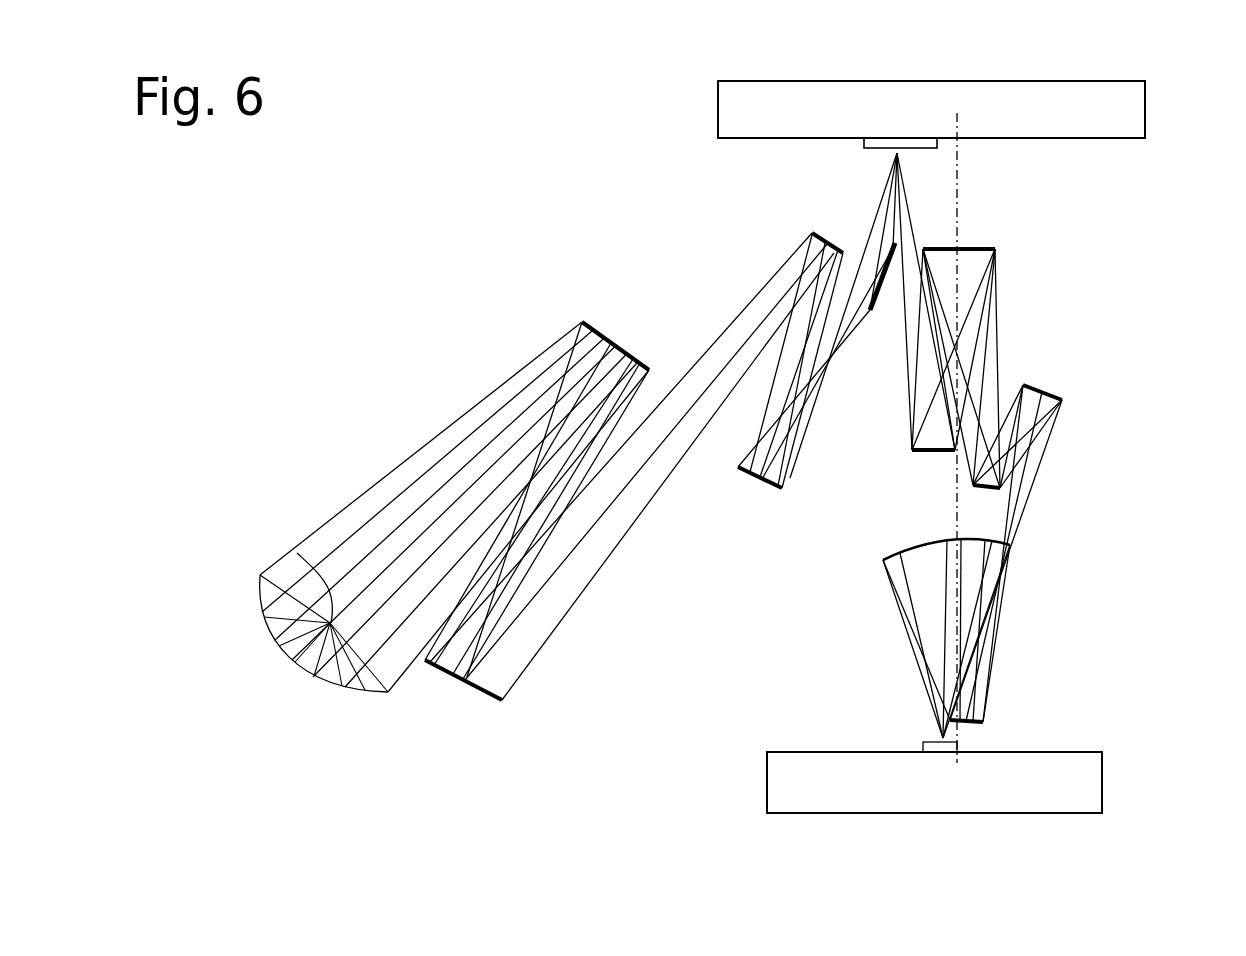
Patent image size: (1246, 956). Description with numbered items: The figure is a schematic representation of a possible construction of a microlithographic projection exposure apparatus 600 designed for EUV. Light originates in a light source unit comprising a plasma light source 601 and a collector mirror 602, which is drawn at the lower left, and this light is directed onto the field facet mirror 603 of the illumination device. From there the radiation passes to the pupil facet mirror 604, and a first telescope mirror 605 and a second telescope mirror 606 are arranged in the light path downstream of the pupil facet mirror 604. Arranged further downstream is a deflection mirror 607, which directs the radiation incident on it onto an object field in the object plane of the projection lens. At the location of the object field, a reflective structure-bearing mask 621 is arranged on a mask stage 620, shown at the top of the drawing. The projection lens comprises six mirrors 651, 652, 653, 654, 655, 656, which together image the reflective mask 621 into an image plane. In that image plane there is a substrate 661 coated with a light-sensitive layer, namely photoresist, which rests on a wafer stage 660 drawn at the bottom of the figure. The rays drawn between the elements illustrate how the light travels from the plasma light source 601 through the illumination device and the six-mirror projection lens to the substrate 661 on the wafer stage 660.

The projection exposure apparatus 600 is at (650, 180).
The plasma light source 601 is at (297, 553).
The collector mirror 602 is at (298, 676).
The field facet mirror 603 is at (613, 326).
The pupil facet mirror 604 is at (450, 686).
The first telescope mirror 605 is at (845, 245).
The second telescope mirror 606 is at (756, 481).
The deflection mirror 607 is at (890, 286).
The mask stage 620 is at (1103, 113).
The reflective structure-bearing mask 621 is at (862, 144).
The mirror of the projection lens 651 is at (925, 453).
The mirror of the projection lens 652 is at (984, 246).
The mirror of the projection lens 653 is at (980, 494).
The mirror of the projection lens 654 is at (1047, 387).
The mirror of the projection lens 655 is at (985, 722).
The mirror of the projection lens 656 is at (922, 546).
The wafer stage 660 is at (1060, 785).
The substrate 661 is at (925, 748).